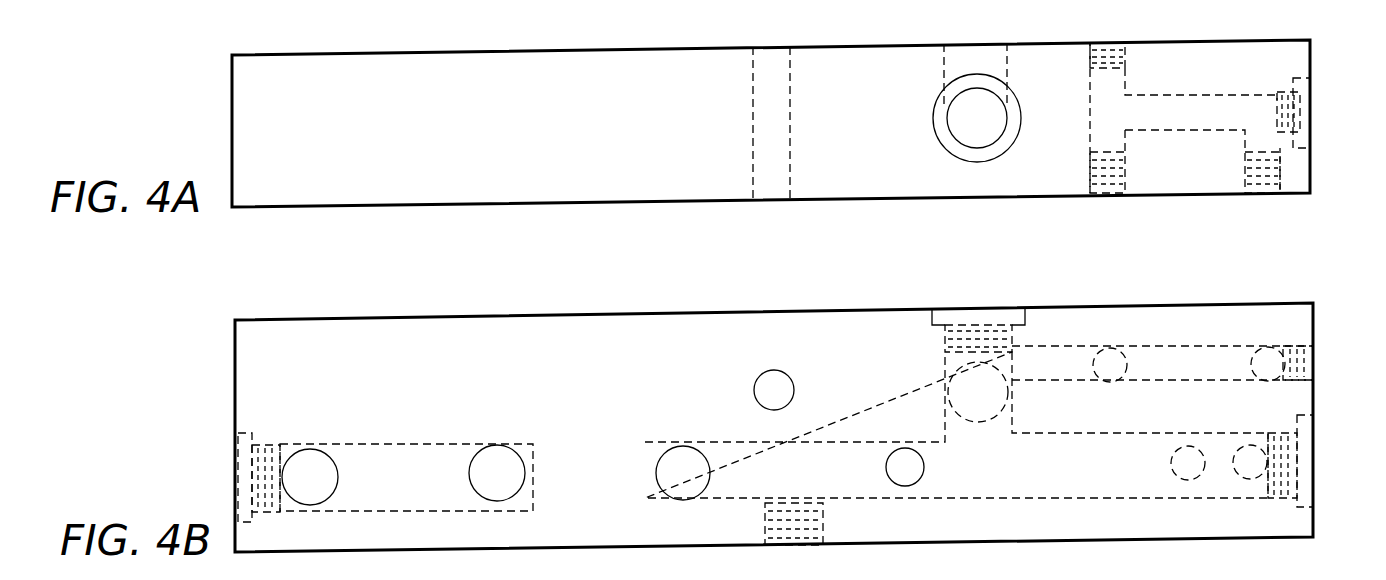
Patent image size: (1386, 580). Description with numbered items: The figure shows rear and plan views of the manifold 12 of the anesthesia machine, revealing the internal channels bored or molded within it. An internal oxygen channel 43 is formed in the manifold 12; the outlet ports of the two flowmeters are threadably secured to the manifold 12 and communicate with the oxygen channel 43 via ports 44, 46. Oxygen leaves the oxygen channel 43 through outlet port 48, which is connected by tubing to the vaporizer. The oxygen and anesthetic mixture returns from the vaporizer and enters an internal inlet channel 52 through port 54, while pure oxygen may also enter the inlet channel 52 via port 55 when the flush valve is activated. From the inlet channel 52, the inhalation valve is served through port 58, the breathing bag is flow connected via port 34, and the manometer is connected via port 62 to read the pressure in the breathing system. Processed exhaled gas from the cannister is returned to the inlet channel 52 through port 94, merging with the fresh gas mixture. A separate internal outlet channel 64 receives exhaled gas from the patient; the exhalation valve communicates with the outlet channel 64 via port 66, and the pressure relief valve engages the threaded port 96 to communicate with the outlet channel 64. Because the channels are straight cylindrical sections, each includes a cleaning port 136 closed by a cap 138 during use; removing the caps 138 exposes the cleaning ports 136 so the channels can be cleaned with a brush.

In FIG. 4A, the manifold 12 is at (1214, 41).
In FIG. 4B, the manifold 12 is at (1313, 397).
In FIG. 4B, the port 34 is at (793, 545).
In FIG. 4A, the internal oxygen channel 43 is at (1175, 93).
In FIG. 4B, the internal oxygen channel 43 is at (1145, 346).
In FIG. 4A, the port 44 is at (1110, 196).
In FIG. 4B, the port 44 is at (1093, 360).
In FIG. 4A, the port 46 is at (1260, 196).
In FIG. 4B, the port 46 is at (1272, 348).
In FIG. 4A, the outlet port 48 is at (1122, 42).
In FIG. 4B, the internal inlet channel 52 is at (808, 447).
In FIG. 4B, the port 54 is at (1235, 470).
In FIG. 4B, the port 55 is at (1170, 462).
In FIG. 4B, the port 58 is at (665, 455).
In FIG. 4B, the port 62 is at (925, 470).
In FIG. 4B, the internal outlet channel 64 is at (370, 443).
In FIG. 4B, the port 66 is at (305, 448).
In FIG. 4B, the port 94 is at (1005, 392).
In FIG. 4B, the threaded port 96 is at (495, 445).
In FIG. 4A, the cleaning port 136 is at (1312, 110).
In FIG. 4B, the cleaning port 136 is at (265, 445).
In FIG. 4A, the cap 138 is at (972, 120).
In FIG. 4B, the cap 138 is at (235, 480).